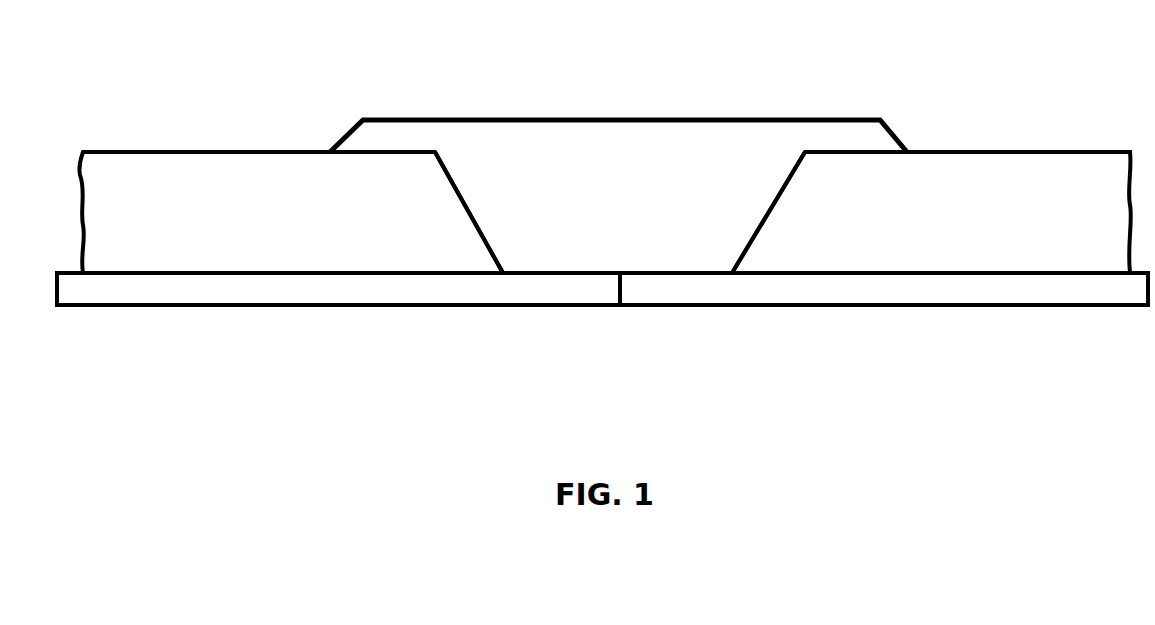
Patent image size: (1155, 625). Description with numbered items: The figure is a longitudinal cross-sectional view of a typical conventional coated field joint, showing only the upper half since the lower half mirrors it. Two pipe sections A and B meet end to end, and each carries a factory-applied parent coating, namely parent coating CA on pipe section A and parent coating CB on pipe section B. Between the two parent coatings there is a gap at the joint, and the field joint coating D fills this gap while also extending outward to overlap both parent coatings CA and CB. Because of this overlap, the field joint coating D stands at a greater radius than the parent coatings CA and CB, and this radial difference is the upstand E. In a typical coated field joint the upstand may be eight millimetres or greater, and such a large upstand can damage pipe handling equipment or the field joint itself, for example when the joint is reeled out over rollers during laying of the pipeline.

The pipe section A is at (365, 291).
The pipe section B is at (872, 292).
The parent coating CA is at (215, 218).
The parent coating CB is at (957, 192).
The field joint coating D is at (608, 185).
The upstand E is at (392, 215).